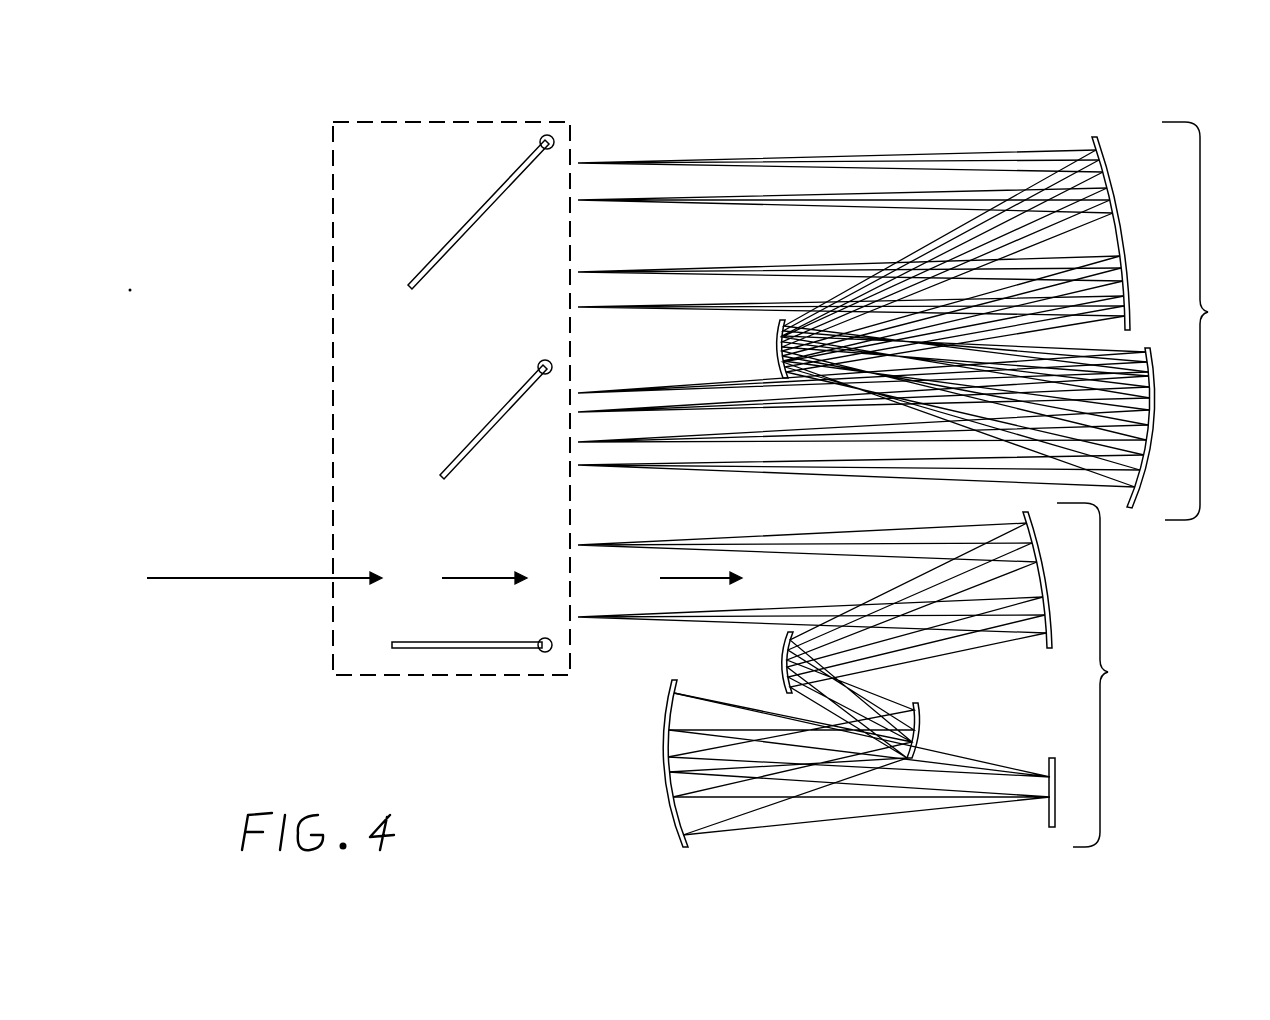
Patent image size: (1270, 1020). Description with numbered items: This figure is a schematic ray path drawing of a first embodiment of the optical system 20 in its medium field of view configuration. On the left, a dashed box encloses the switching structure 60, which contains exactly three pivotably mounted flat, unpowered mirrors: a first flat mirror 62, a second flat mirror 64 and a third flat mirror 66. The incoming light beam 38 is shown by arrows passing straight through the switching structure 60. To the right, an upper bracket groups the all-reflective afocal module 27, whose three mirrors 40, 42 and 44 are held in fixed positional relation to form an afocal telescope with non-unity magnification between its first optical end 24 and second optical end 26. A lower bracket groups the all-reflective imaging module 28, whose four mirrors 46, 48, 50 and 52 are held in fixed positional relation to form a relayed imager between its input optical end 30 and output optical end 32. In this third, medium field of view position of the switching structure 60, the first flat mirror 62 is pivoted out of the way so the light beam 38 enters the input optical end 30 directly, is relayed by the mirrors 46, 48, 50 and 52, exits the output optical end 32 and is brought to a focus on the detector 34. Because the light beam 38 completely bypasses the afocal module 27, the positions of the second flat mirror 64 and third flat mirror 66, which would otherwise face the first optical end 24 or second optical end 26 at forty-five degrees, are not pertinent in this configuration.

The optical system 20 is at (328, 97).
The switching structure 60 is at (502, 111).
The third flat mirror 66 is at (468, 224).
The second flat mirror 64 is at (480, 433).
The first flat mirror 62 is at (410, 641).
The light beam 38 is at (228, 582).
The second optical end 26 is at (578, 240).
The first optical end 24 is at (580, 427).
The input optical end 30 is at (583, 582).
The first optical module (afocal telescope) 27 is at (986, 321).
The mirror 40 is at (1110, 190).
The mirror 42 is at (778, 348).
The mirror 44 is at (1140, 470).
The imaging module 28 is at (877, 683).
The mirror 46 is at (1040, 557).
The mirror 48 is at (786, 660).
The mirror 50 is at (917, 738).
The mirror 52 is at (667, 755).
The output optical end 32 is at (1043, 800).
The detector 34 is at (1062, 763).